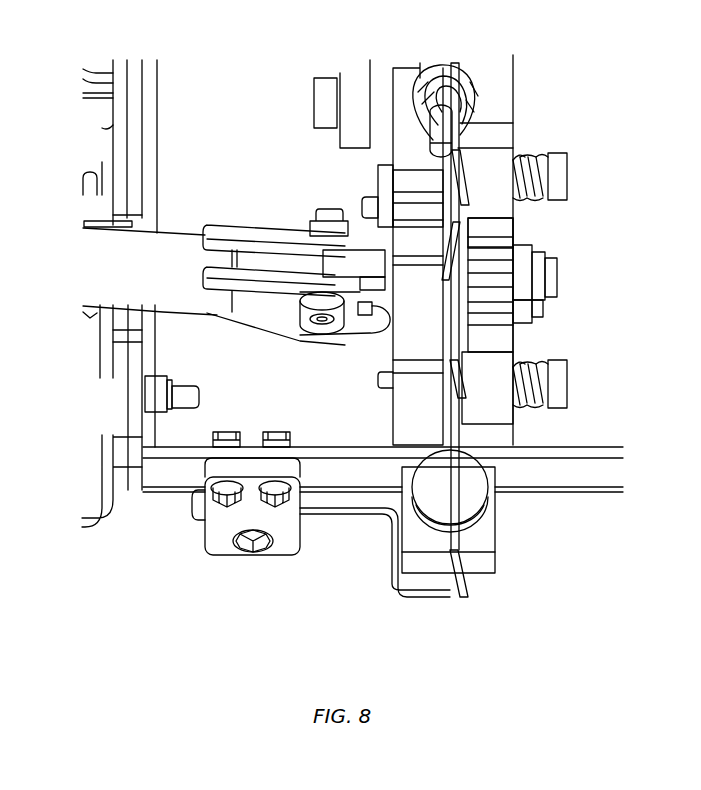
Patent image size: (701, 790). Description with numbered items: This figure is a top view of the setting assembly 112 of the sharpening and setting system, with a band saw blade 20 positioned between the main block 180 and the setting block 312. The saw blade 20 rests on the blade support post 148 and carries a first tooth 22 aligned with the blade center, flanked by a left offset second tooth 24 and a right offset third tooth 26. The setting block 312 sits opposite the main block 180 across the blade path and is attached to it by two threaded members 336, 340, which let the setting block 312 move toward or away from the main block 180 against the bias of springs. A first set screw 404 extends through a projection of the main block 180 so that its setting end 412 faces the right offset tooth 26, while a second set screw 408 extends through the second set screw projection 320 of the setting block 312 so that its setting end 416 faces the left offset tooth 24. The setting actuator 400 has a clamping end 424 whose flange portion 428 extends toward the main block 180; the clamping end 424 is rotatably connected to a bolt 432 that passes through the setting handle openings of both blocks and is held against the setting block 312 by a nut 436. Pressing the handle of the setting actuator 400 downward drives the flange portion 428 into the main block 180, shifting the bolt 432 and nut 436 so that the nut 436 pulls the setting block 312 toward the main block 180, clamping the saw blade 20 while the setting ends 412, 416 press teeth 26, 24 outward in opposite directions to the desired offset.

The setting assembly 112 is at (250, 140).
The main block 180 is at (418, 178).
The setting end 412 is at (408, 190).
The first set screw 404 is at (362, 206).
The setting actuator 400 is at (175, 240).
The third tooth 26 is at (459, 207).
The threaded member 336 is at (560, 173).
The second tooth 24 is at (498, 253).
The second set screw projection 320 is at (497, 255).
The second set screw 408 is at (548, 258).
The nut 436 is at (553, 275).
The setting end 416 is at (448, 262).
The first tooth 22 is at (457, 322).
The threaded member 340 is at (560, 387).
The setting block 312 is at (505, 410).
The blade support post 148 is at (473, 490).
The band saw blade 20 is at (470, 538).
The flange portion 428 is at (370, 330).
The bolt 432 is at (383, 293).
The clamping end 424 is at (280, 348).